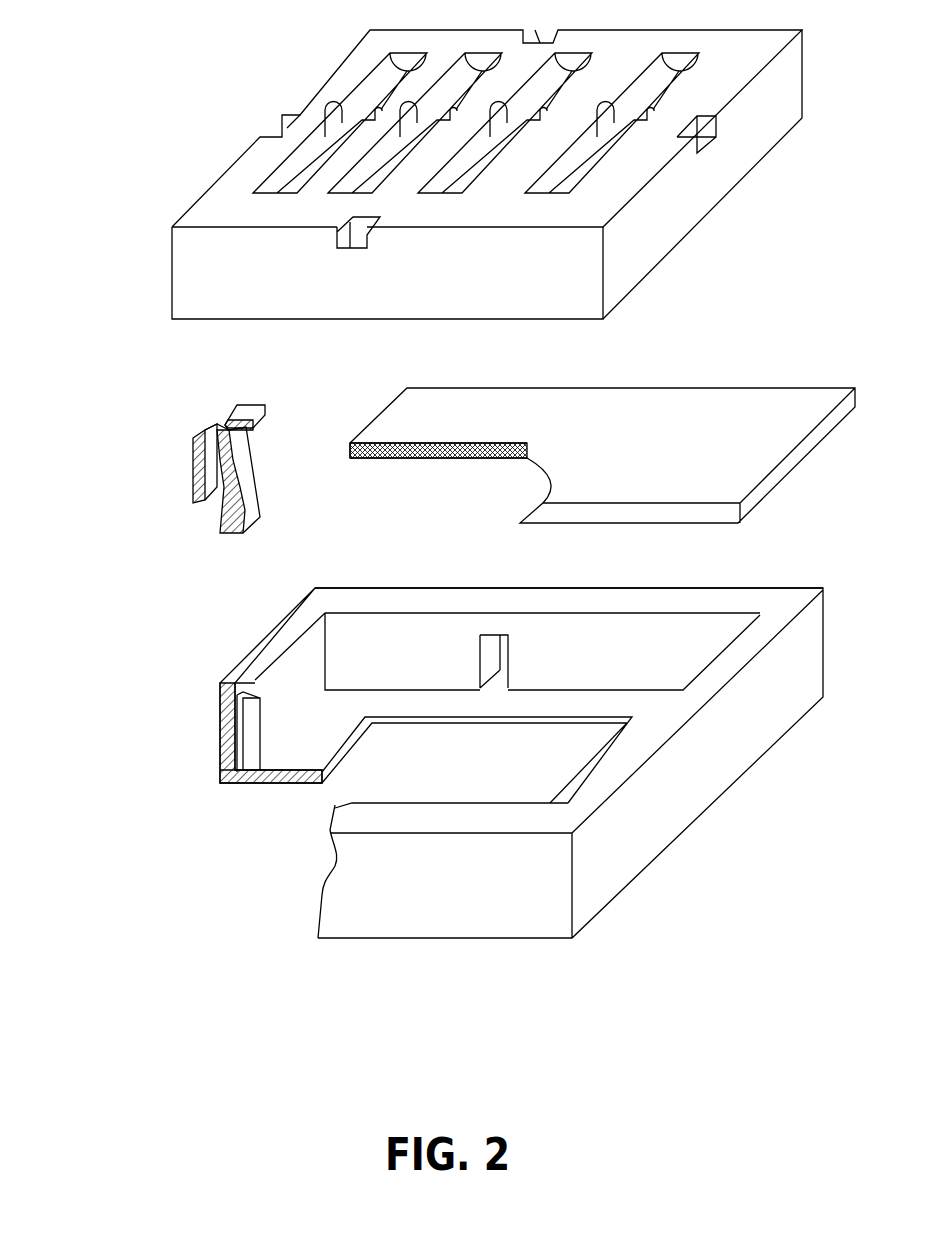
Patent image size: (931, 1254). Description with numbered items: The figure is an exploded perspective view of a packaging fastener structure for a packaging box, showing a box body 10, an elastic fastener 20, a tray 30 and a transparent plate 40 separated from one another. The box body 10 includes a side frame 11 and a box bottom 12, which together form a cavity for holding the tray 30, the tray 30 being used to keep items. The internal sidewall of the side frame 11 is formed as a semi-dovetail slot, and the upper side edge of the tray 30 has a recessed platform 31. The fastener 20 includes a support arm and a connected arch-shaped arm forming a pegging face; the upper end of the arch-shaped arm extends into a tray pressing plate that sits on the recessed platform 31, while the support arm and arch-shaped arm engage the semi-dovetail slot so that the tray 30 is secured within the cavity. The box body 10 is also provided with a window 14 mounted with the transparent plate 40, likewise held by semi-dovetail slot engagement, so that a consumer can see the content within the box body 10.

The box body 10 is at (398, 907).
The side frame 11 is at (493, 668).
The box bottom 12 is at (365, 603).
The window 14 is at (440, 753).
The fastener 20 is at (187, 465).
The tray 30 is at (228, 266).
The recessed platform 31 is at (342, 230).
The transparent plate 40 is at (700, 403).